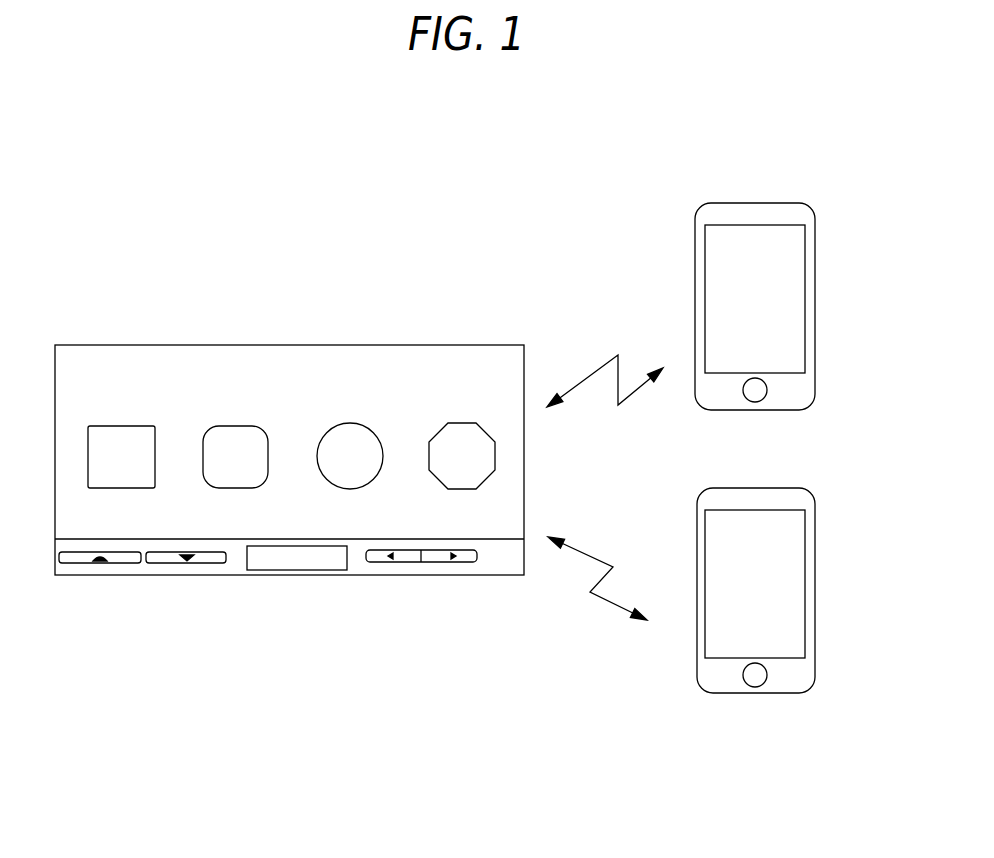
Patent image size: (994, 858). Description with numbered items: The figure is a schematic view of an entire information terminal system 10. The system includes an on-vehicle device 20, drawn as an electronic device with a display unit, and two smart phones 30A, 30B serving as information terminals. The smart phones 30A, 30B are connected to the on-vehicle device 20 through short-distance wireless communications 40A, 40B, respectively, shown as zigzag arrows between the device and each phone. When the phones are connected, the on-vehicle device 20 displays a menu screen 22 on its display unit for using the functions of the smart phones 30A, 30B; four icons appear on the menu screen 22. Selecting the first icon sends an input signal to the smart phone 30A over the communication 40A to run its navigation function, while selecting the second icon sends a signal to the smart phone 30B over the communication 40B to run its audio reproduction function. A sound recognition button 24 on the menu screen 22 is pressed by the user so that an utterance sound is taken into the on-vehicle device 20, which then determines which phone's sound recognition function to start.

The information terminal system 10 is at (357, 173).
The on-vehicle device 20 is at (244, 296).
The menu screen 22 is at (476, 345).
The sound recognition button 24 is at (290, 564).
The smart phone 30A is at (817, 307).
The smart phone 30B is at (817, 589).
The short-distance wireless communication 40A is at (620, 353).
The short-distance wireless communication 40B is at (610, 562).